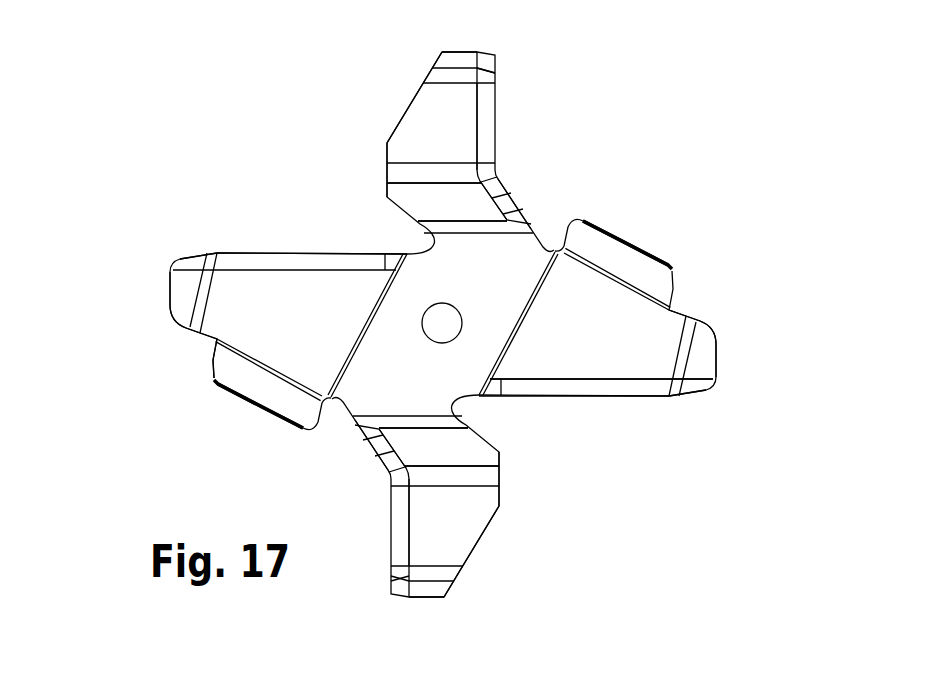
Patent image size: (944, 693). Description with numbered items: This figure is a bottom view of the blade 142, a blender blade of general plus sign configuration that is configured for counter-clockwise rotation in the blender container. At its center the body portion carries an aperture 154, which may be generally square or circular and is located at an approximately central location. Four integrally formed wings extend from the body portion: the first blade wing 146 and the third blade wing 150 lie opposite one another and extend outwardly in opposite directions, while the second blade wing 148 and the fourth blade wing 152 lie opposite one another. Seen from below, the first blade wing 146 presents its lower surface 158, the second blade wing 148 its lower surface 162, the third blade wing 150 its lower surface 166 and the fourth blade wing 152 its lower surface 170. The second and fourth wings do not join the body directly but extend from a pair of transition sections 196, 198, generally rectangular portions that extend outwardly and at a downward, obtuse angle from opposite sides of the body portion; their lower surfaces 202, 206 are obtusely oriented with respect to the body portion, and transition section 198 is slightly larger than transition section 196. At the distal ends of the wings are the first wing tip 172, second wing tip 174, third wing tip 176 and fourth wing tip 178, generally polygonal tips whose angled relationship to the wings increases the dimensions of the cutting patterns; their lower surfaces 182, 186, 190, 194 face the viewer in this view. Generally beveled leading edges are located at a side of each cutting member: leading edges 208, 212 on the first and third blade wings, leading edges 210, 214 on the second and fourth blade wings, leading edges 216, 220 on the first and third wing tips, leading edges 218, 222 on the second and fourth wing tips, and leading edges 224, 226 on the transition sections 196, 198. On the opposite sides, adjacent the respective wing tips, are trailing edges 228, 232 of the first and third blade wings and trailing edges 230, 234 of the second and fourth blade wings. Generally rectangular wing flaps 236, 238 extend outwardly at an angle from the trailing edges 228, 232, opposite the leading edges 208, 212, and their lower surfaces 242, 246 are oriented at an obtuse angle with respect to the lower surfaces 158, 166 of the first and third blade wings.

The blade 142 is at (186, 138).
The first blade wing 146 is at (615, 355).
The second blade wing 148 is at (426, 533).
The third blade wing 150 is at (254, 289).
The fourth blade wing 152 is at (464, 137).
The aperture 154 is at (447, 326).
The lower surface 158 is at (535, 348).
The lower surface 162 is at (458, 534).
The lower surface 166 is at (240, 322).
The lower surface 170 is at (432, 110).
The first wing tip 172 is at (727, 355).
The second wing tip 174 is at (445, 603).
The third wing tip 176 is at (160, 317).
The fourth wing tip 178 is at (466, 39).
The lower surface 182 is at (703, 347).
The lower surface 186 is at (424, 594).
The lower surface 190 is at (180, 291).
The lower surface 194 is at (445, 58).
The transition section 196 is at (397, 447).
The transition section 198 is at (432, 208).
The lower surface 202 is at (465, 440).
The lower surface 206 is at (417, 197).
The leading edge 208 is at (598, 388).
The leading edge 210 is at (395, 546).
The leading edge 212 is at (268, 256).
The leading edge 214 is at (487, 108).
The leading edge 216 is at (698, 386).
The leading edge 218 is at (400, 589).
The leading edge 220 is at (195, 260).
The leading edge 222 is at (487, 62).
The leading edge 224 is at (377, 443).
The leading edge 226 is at (509, 204).
The trailing edge 228 is at (673, 307).
The trailing edge 230 is at (499, 518).
The trailing edge 232 is at (222, 346).
The trailing edge 234 is at (384, 143).
The wing flap 236 is at (620, 239).
The wing flap 238 is at (267, 414).
The lower surface 242 is at (638, 275).
The lower surface 246 is at (242, 378).